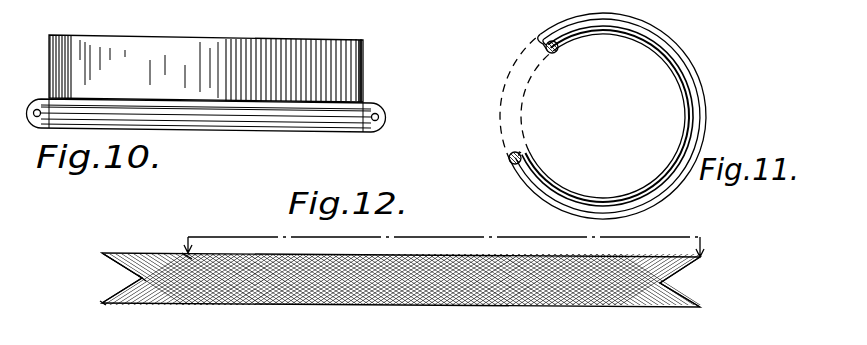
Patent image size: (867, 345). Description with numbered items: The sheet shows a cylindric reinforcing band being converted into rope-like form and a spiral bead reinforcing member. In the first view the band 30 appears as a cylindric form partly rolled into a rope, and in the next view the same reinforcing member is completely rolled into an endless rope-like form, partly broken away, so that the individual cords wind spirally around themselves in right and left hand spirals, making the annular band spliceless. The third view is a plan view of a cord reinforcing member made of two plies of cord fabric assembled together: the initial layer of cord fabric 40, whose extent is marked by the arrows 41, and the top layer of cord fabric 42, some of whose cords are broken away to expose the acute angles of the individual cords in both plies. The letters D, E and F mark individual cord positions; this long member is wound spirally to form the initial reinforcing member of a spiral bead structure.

In FIG. 10, the cylindrical sleeve with base roll 30 is at (206, 66).
In FIG. 12, the initial layer of cord fabric 40 is at (140, 305).
In FIG. 12, the arrows 41 is at (482, 237).
In FIG. 12, the top layer of cord fabric 42 is at (128, 252).
In FIG. 12, the individual cord position F is at (160, 232).
In FIG. 12, the individual cord position E is at (106, 278).
In FIG. 12, the individual cord position D is at (96, 307).